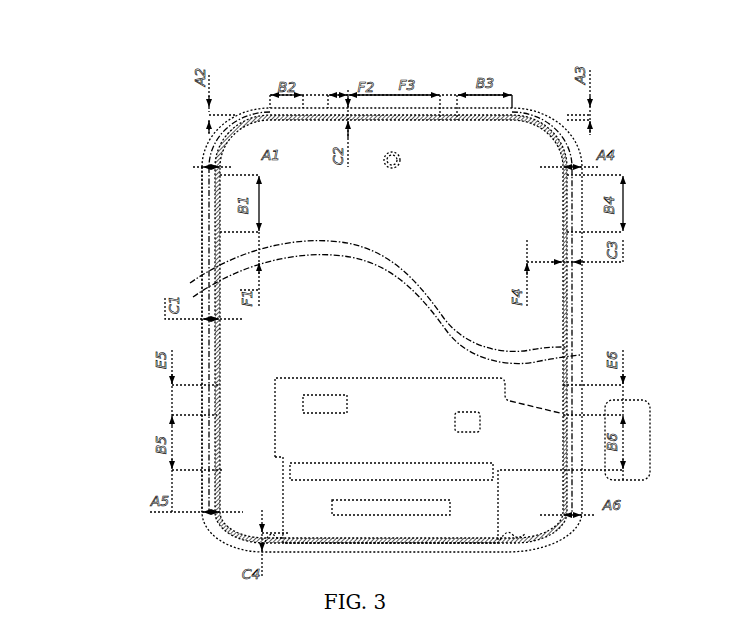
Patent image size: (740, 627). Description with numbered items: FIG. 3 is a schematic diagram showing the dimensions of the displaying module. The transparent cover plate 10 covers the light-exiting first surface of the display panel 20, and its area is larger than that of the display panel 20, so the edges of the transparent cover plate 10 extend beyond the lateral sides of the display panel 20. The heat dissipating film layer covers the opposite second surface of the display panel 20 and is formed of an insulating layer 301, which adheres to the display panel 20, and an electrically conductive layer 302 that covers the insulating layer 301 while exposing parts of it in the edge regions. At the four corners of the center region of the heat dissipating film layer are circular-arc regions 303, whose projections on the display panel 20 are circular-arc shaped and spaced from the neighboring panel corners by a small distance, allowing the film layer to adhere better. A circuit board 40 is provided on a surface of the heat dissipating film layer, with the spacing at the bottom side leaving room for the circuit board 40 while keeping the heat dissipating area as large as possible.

The transparent cover plate 10 is at (200, 183).
The display panel 20 is at (207, 205).
The insulating layer 301 is at (203, 238).
The electrically conductive layer 302 is at (208, 258).
The circular-arc regions 303 is at (560, 146).
The circuit board 40 is at (415, 400).